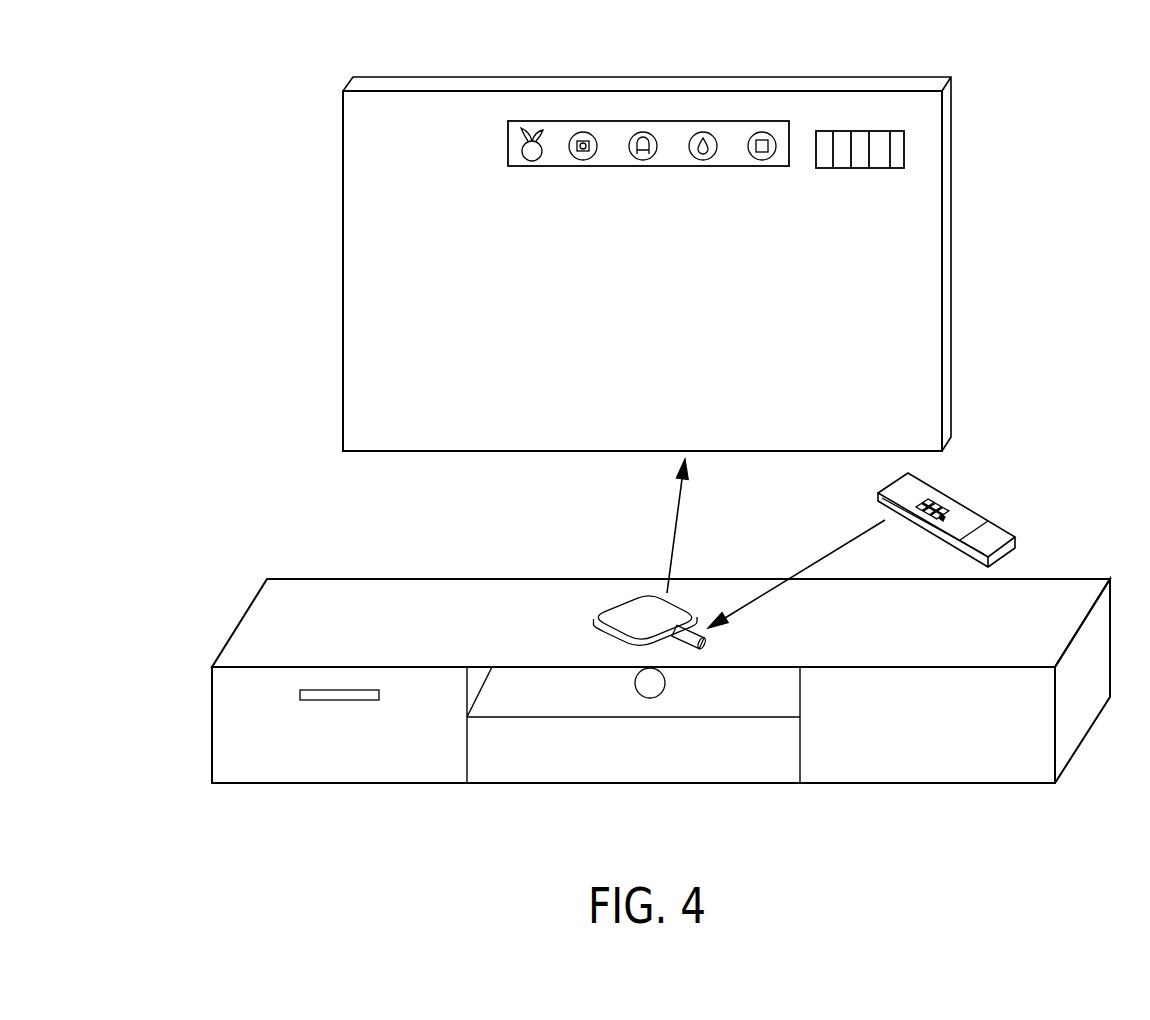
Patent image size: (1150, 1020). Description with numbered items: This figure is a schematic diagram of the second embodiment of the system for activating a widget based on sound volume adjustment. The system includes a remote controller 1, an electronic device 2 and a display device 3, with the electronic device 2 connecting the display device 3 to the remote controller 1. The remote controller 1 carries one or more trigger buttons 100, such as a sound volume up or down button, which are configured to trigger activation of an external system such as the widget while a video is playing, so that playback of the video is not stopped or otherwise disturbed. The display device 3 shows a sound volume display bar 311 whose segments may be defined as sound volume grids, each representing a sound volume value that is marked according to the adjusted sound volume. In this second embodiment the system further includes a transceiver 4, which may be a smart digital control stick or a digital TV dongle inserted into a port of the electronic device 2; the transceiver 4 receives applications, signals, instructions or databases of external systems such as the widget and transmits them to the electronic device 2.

The remote controller 1 is at (982, 500).
The trigger button 100 is at (950, 498).
The electronic device 2 is at (637, 613).
The display device 3 is at (672, 77).
The sound volume display bar 311 is at (860, 131).
The transceiver 4 is at (698, 646).